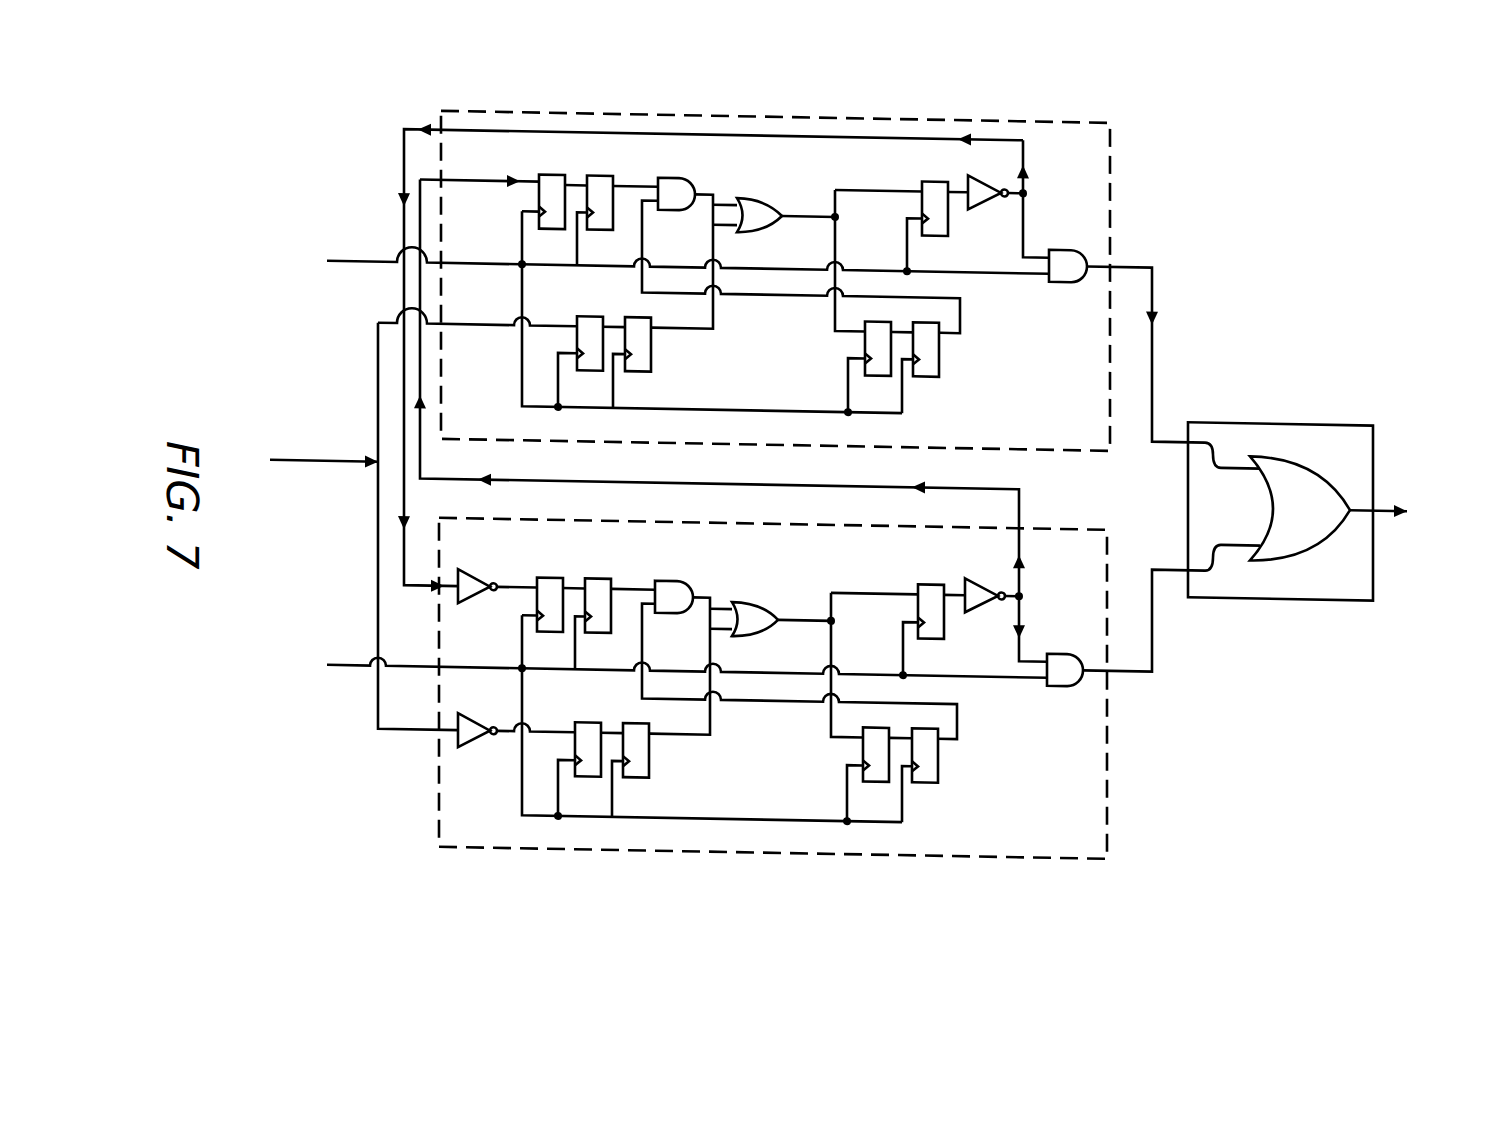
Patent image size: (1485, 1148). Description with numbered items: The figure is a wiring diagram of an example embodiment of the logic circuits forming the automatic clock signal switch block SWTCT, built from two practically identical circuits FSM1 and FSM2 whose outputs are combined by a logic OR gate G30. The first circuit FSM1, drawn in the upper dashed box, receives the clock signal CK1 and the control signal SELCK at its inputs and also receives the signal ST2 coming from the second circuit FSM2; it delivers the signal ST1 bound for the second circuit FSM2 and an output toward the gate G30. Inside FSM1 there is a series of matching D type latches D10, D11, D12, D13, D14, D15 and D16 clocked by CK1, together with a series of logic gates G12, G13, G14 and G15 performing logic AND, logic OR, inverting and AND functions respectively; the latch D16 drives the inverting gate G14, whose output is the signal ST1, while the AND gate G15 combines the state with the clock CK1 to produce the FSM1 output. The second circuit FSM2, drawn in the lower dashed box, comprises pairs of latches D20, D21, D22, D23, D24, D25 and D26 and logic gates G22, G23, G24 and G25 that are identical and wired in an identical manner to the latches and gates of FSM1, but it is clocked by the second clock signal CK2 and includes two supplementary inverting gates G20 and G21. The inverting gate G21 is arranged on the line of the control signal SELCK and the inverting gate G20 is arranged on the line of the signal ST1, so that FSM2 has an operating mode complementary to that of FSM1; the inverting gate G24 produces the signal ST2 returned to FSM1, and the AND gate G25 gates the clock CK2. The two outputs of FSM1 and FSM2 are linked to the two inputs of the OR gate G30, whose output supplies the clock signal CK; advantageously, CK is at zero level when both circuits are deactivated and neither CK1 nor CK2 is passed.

The first circuit FSM1 is at (620, 111).
The second circuit FSM2 is at (843, 847).
The automatic switch block SWTCT is at (1185, 228).
The latch of D type D10 is at (549, 172).
The latch of D type D11 is at (600, 173).
The latch of D type D12 is at (592, 314).
The latch of D type D13 is at (652, 340).
The latch of D type D14 is at (865, 338).
The latch of D type D15 is at (940, 340).
The latch of D type D16 is at (925, 173).
The logic gate G12 is at (685, 174).
The logic gate G13 is at (772, 193).
The logic gate G14 is at (984, 174).
The logic gate G15 is at (1073, 271).
The latch of D type D20 is at (549, 576).
The latch of D type D21 is at (598, 576).
The latch of D type D22 is at (590, 720).
The latch of D type D23 is at (652, 748).
The latch of D type D24 is at (863, 743).
The latch of D type D25 is at (940, 744).
The latch of D type D26 is at (925, 576).
The inverting gate G20 is at (470, 600).
The inverting gate G21 is at (467, 745).
The logic gate G22 is at (683, 577).
The logic gate G23 is at (772, 597).
The logic gate G24 is at (983, 577).
The logic gate G25 is at (1071, 675).
The logic OR gate G30 is at (1297, 456).
The clock signal CK1 is at (663, 259).
The clock signal CK2 is at (662, 662).
The signal ST1 is at (714, 376).
The signal ST2 is at (741, 409).
The control signal SELCK is at (419, 519).
The output signal CK is at (1395, 509).